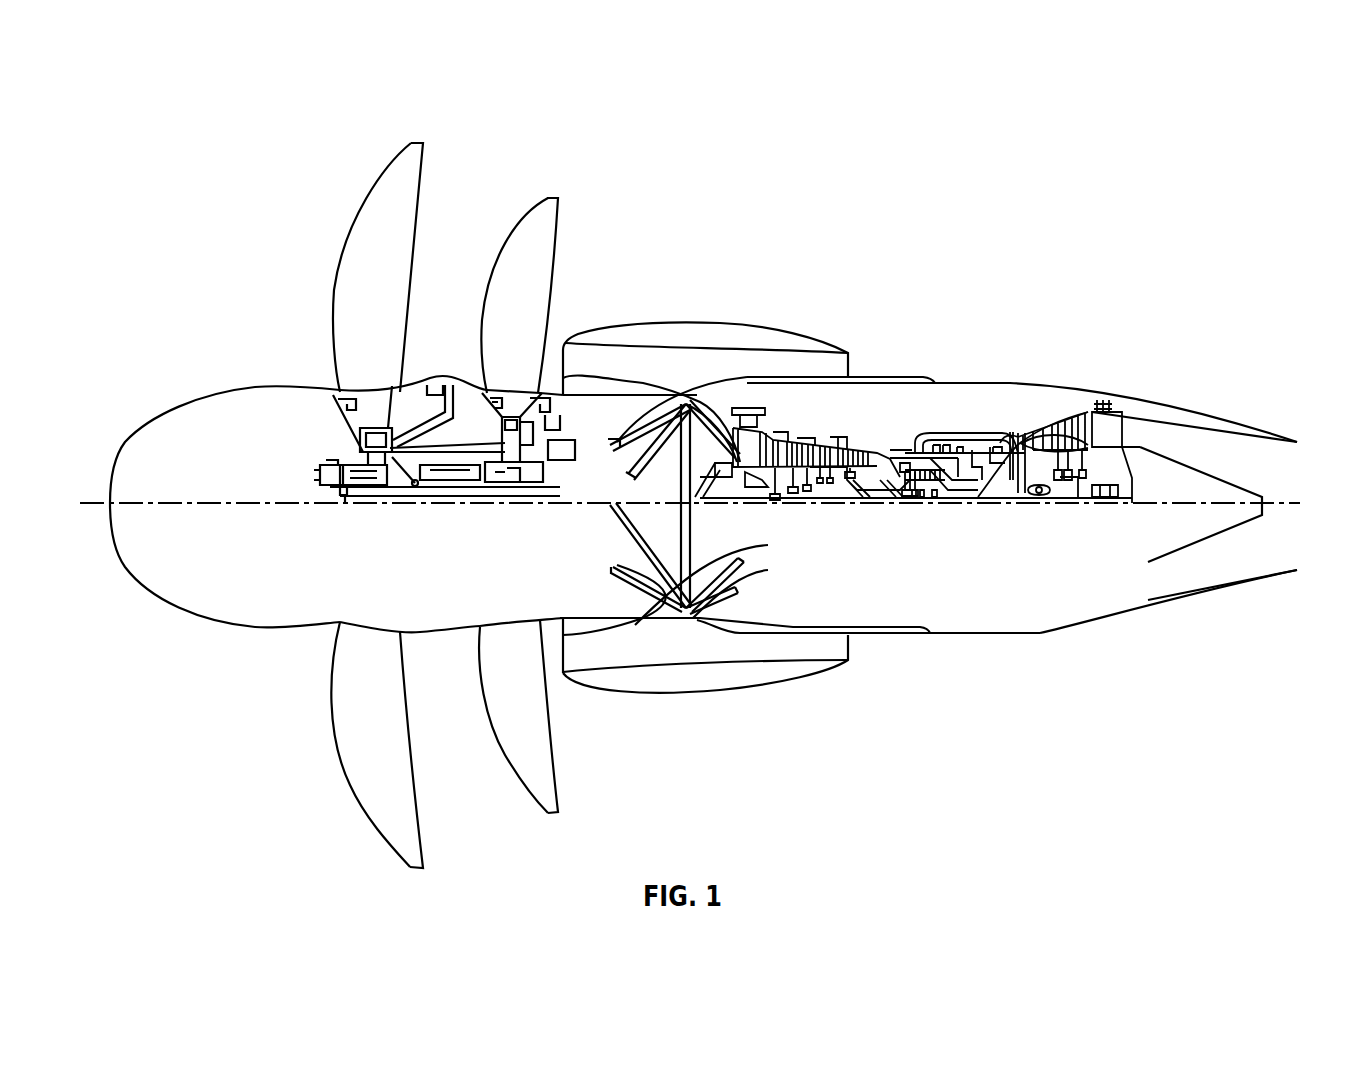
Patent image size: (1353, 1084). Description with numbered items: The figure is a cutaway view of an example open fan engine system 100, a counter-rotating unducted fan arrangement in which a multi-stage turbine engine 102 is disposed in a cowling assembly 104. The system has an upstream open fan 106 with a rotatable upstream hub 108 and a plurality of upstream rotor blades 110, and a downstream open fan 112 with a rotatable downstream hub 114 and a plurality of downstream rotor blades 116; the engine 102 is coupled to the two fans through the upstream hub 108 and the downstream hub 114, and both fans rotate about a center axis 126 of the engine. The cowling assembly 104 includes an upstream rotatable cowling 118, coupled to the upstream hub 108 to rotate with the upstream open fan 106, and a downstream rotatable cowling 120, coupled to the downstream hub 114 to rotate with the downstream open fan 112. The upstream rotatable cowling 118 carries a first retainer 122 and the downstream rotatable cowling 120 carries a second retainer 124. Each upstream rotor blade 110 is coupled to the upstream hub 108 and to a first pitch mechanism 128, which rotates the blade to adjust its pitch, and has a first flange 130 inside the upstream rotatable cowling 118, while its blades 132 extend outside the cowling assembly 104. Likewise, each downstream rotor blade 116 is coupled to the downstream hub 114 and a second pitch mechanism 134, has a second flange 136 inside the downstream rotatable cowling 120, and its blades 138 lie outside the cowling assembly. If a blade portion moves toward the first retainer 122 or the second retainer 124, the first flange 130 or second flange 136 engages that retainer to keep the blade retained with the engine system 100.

The open fan engine system 100 is at (209, 120).
The multi-stage turbine engine 102 is at (965, 421).
The cowling assembly 104 is at (1028, 630).
The upstream open fan 106 is at (418, 137).
The upstream hub 108 is at (358, 440).
The upstream rotor blades 110 is at (378, 214).
The downstream open fan 112 is at (554, 192).
The downstream hub 114 is at (507, 418).
The downstream rotor blades 116 is at (527, 232).
The upstream rotatable cowling 118 is at (335, 392).
The downstream rotatable cowling 120 is at (490, 385).
The first retainer 122 is at (413, 385).
The second retainer 124 is at (540, 385).
The center axis 126 is at (192, 503).
The first pitch mechanism 128 is at (367, 488).
The first flange 130 is at (357, 409).
The blades 132 is at (383, 333).
The second pitch mechanism 134 is at (517, 452).
The second flange 136 is at (493, 405).
The blades 138 is at (530, 345).